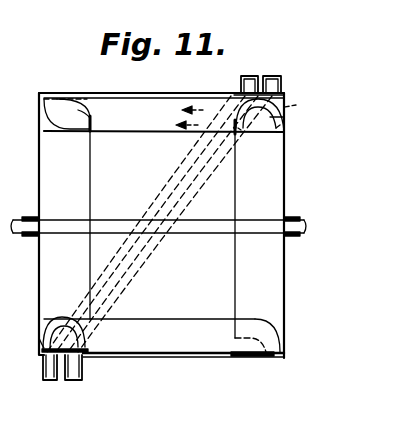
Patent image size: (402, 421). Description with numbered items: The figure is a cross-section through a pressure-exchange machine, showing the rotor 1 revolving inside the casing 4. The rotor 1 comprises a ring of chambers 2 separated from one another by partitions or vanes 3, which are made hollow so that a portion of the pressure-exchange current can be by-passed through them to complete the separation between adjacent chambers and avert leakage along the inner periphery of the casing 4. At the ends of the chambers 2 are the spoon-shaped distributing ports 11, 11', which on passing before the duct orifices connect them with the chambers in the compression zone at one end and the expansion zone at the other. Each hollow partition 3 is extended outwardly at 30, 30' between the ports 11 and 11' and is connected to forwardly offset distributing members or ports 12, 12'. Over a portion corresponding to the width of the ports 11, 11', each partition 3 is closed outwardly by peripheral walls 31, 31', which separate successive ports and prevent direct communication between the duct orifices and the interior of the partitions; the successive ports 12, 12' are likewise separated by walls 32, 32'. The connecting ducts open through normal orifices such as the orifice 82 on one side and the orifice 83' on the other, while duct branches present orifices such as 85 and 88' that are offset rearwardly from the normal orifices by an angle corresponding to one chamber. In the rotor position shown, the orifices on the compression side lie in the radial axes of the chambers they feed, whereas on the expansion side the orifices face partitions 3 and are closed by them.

The rotor 1 is at (175, 318).
The chambers 2 is at (167, 128).
The partitions or vanes 3 is at (152, 290).
The casing 4 is at (185, 357).
The distributing port 11 is at (303, 232).
The distributing member or port 12 is at (303, 227).
The outward extension of hollow partition 30 is at (286, 229).
The peripheral wall 31 is at (246, 225).
The wall 32 is at (300, 244).
The duct orifice 82 is at (241, 83).
The branch orifice 85 is at (278, 78).
The distributing port 11' is at (75, 95).
The distributing member or port 12' is at (39, 231).
The outward extension of hollow partition 30' is at (45, 240).
The peripheral wall 31' is at (98, 234).
The wall 32' is at (37, 219).
The duct orifice 83' is at (81, 379).
The branch orifice 88' is at (41, 379).